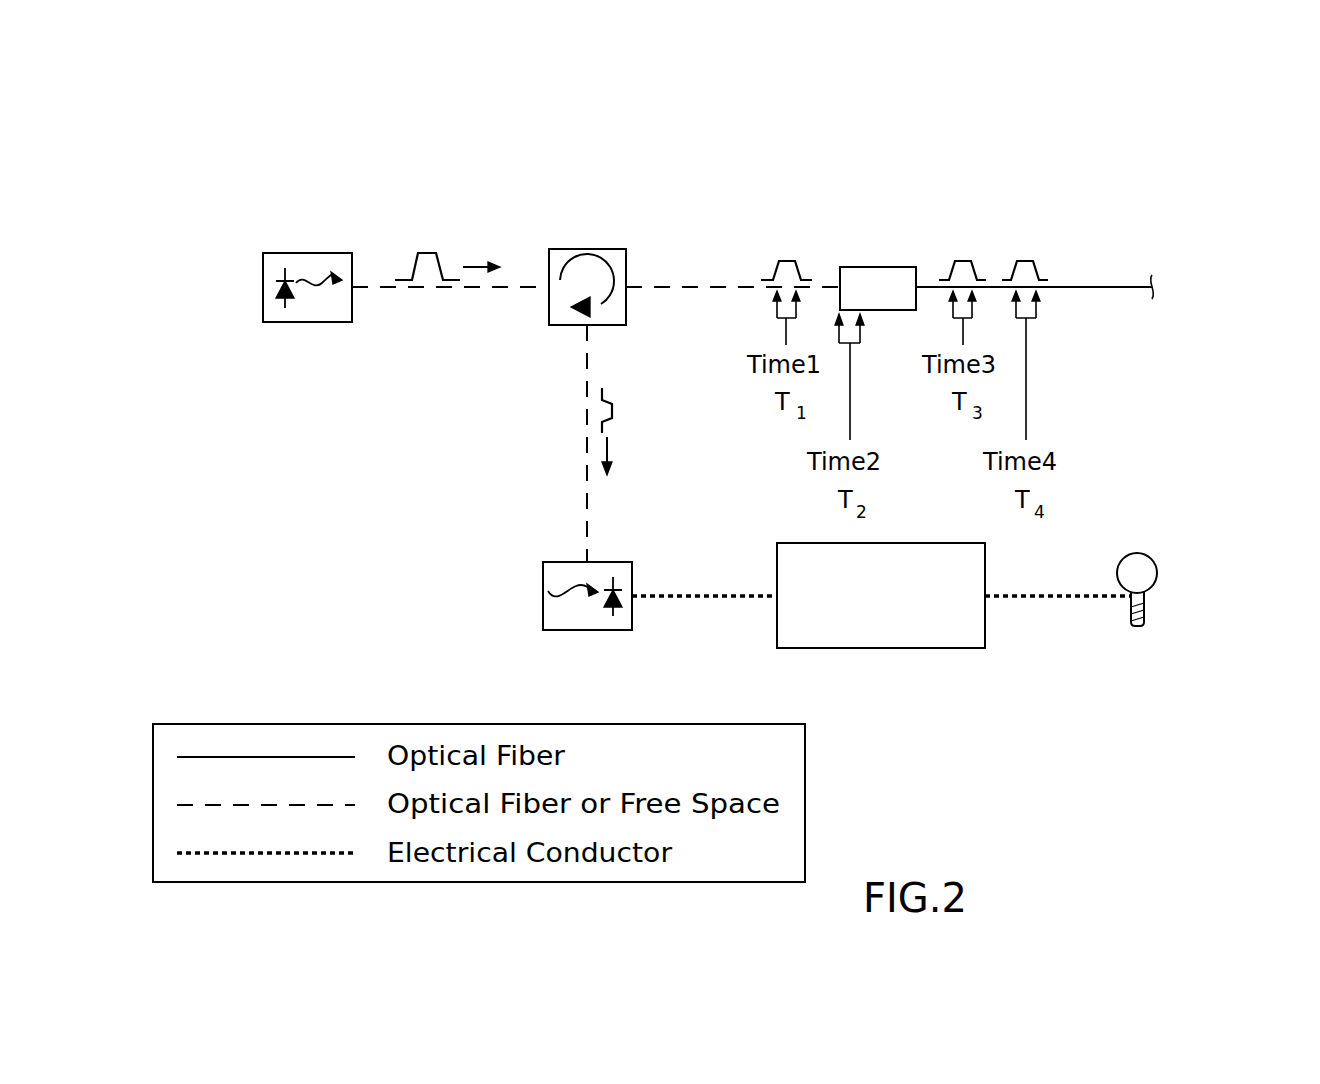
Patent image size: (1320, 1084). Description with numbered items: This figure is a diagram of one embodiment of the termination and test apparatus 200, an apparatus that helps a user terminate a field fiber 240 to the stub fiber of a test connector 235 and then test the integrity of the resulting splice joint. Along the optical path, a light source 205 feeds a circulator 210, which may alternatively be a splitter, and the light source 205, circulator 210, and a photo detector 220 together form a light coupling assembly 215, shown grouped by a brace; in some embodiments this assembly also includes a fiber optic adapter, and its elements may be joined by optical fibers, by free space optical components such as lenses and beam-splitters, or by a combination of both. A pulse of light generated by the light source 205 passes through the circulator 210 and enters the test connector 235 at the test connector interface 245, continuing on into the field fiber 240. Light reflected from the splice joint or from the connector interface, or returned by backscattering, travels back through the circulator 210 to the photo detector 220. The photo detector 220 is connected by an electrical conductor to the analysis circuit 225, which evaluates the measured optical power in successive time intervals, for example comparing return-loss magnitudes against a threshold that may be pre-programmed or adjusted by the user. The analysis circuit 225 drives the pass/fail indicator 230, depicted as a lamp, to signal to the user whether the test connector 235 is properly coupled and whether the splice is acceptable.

The termination and test apparatus 200 is at (422, 414).
The light source 205 is at (263, 303).
The circulator 210 is at (626, 257).
The light coupling assembly 215 is at (840, 197).
The photo detector 220 is at (543, 610).
The analysis circuit 225 is at (881, 595).
The pass/fail indicator 230 is at (1157, 563).
The test connector 235 is at (892, 240).
The field fiber 240 is at (1111, 263).
The test connector interface 245 is at (840, 232).